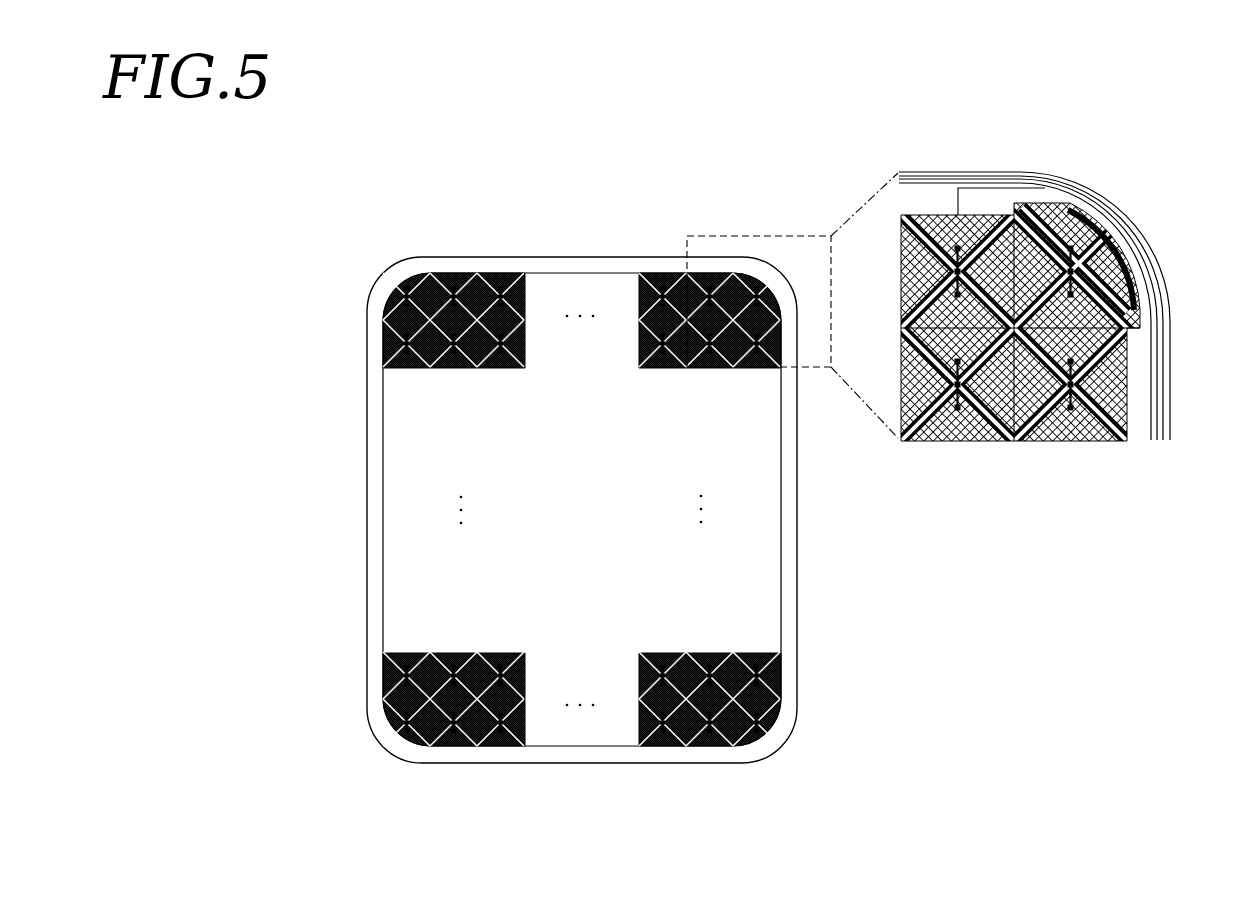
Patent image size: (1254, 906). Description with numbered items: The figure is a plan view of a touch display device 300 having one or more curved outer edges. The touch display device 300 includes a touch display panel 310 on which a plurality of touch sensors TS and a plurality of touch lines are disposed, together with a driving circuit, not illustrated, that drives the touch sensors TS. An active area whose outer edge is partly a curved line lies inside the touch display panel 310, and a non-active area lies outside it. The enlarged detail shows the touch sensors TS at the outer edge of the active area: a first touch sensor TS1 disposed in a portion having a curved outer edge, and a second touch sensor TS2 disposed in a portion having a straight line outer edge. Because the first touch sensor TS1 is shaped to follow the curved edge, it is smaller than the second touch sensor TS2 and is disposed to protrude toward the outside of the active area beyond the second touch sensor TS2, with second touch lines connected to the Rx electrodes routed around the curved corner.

The touch display device 300 is at (386, 163).
The touch display panel 310 is at (458, 257).
The touch sensor TS is at (665, 282).
The first touch sensor TS1 is at (1032, 207).
The second touch sensor TS2 is at (945, 228).